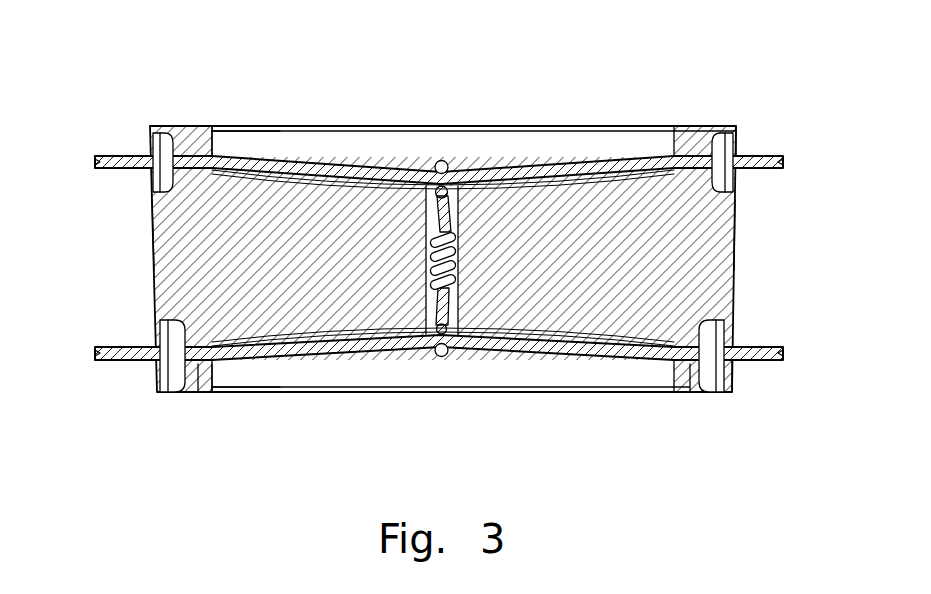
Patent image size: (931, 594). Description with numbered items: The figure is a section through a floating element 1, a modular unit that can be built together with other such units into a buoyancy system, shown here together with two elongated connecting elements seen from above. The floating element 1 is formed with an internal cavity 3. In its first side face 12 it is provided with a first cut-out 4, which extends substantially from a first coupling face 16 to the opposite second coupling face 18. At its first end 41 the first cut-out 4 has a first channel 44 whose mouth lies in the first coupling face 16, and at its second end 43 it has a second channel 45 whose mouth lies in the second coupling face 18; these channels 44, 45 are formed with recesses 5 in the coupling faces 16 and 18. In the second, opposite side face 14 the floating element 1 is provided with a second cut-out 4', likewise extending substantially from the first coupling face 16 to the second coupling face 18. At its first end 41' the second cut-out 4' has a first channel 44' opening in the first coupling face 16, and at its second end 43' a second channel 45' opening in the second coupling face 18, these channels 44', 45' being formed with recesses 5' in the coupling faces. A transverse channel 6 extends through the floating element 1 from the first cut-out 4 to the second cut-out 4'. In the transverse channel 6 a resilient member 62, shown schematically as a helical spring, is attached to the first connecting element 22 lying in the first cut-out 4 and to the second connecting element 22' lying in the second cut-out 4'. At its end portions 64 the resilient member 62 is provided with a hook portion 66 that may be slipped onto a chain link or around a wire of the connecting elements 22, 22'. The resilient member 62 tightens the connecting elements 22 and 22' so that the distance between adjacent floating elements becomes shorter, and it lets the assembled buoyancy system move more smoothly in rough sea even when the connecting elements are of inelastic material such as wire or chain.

The floating element 1 is at (198, 94).
The internal cavity 3 is at (734, 265).
The first cut-out 4 is at (443, 421).
The second cut-out 4' is at (443, 101).
The recesses 5 is at (454, 401).
The recesses 5' is at (454, 118).
The transverse channel 6 is at (458, 175).
The first side face 12 is at (577, 392).
The second side face 14 is at (335, 126).
The first coupling face 16 is at (152, 232).
The second coupling face 18 is at (735, 235).
The first connecting element 22 is at (415, 326).
The second connecting element 22' is at (412, 189).
The first end 41 is at (266, 435).
The first end 41' is at (274, 88).
The second end 43 is at (690, 421).
The second end 43' is at (694, 101).
The first channel 44 is at (223, 423).
The first channel 44' is at (208, 100).
The second channel 45 is at (708, 423).
The second channel 45' is at (715, 89).
The resilient member 62 is at (458, 340).
The end portions 64 is at (427, 172).
The hook portion 66 is at (444, 161).